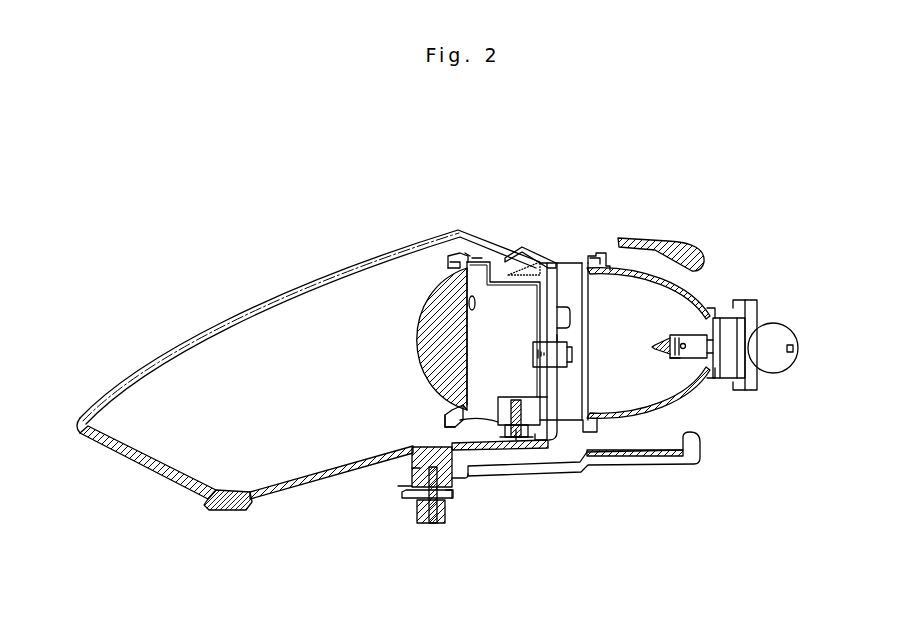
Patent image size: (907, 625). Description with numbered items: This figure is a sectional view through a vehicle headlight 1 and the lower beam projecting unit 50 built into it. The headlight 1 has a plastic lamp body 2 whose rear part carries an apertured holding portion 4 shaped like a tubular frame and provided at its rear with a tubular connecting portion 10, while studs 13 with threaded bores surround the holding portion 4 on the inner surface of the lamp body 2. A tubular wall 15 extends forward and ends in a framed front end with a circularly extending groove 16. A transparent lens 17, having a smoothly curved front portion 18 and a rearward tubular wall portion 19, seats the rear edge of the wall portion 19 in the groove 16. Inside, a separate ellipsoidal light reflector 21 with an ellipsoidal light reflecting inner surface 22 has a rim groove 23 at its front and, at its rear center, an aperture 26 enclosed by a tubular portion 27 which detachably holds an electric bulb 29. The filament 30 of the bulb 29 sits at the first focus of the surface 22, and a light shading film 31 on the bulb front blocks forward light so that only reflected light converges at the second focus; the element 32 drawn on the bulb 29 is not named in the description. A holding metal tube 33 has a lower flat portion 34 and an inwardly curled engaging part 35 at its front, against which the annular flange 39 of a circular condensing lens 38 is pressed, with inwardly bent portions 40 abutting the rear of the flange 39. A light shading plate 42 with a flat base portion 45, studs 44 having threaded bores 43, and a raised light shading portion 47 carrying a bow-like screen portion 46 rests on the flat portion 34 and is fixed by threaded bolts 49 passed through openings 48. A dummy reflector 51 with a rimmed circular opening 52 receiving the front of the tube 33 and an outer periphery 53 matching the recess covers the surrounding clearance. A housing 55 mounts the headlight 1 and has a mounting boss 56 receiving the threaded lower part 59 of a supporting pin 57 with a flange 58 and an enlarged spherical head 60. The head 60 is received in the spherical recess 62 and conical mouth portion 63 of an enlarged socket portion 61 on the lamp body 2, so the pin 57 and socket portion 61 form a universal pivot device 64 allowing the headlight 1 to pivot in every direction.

The headlight 1 is at (122, 232).
The lamp body 2 is at (543, 257).
The apertured holding portion 4 is at (570, 260).
The tubular connecting portion 10 is at (582, 260).
The studs 13 is at (547, 307).
The tubular wall 15 is at (262, 497).
The circularly extending groove 16 is at (230, 487).
The lens 17 is at (145, 363).
The smoothly curved front portion 18 is at (207, 323).
The tubular wall portion 19 is at (140, 460).
The ellipsoidal light reflector 21 is at (668, 418).
The ellipsoidal light reflecting inner surface 22 is at (683, 383).
The circularly extending groove 23 is at (594, 255).
The aperture 26 is at (715, 372).
The tubular portion 27 is at (727, 377).
The electric bulb 29 is at (670, 358).
The filament 30 is at (682, 346).
The light shading film 31 is at (658, 345).
The bulb envelope 32 is at (688, 333).
The holding metal tube 33 is at (477, 257).
The flat portion 34 is at (510, 437).
The engaging part 35 is at (448, 262).
The circular condensing lens 38 is at (422, 303).
The annular flange 39 is at (468, 253).
The portions 40 is at (475, 305).
The light shading plate 42 is at (574, 360).
The threaded bore 43 is at (515, 437).
The studs 44 is at (496, 405).
The flat base portion 45 is at (542, 403).
The bow-like screen portion 46 is at (560, 345).
The light shading portion 47 is at (568, 350).
The openings 48 is at (525, 437).
The threaded bolts 49 is at (520, 437).
The lower beam projecting unit 50 is at (820, 258).
The dummy reflector 51 is at (450, 253).
The rimmed circular opening 52 is at (447, 403).
The outer periphery 53 is at (412, 452).
The housing 55 is at (680, 250).
The mounting boss 56 is at (433, 500).
The supporting pin 57 is at (398, 488).
The flange 58 is at (413, 497).
The threaded lower part 59 is at (432, 505).
The enlarged spherical head 60 is at (450, 427).
The enlarged socket portion 61 is at (412, 468).
The spherical recess 62 is at (447, 420).
The conical mouth portion 63 is at (446, 497).
The universal pivot device 64 is at (395, 493).